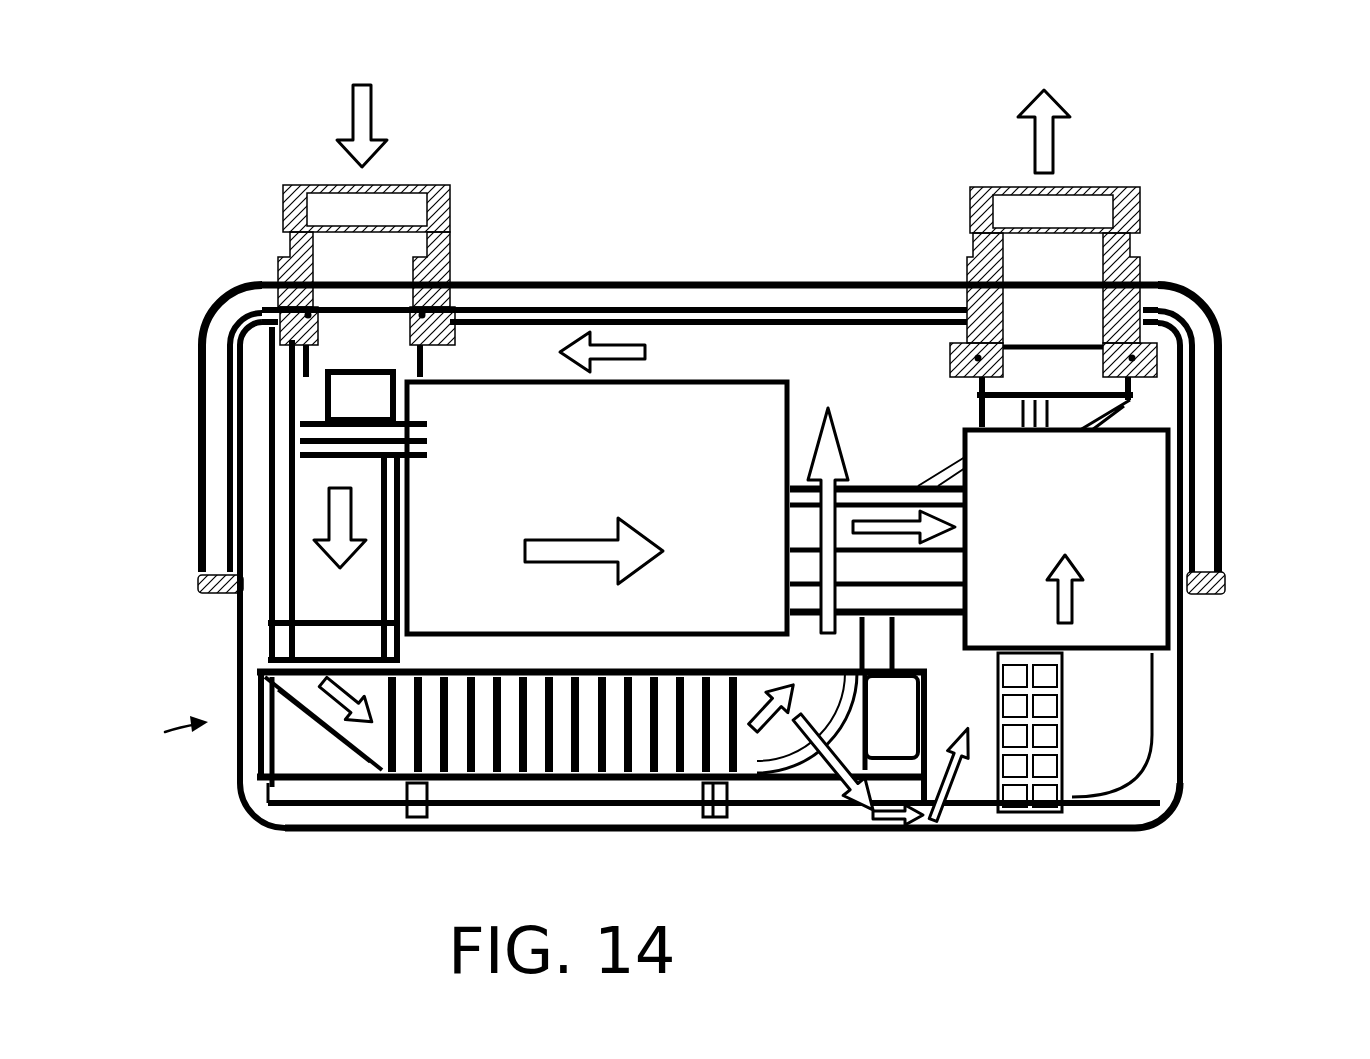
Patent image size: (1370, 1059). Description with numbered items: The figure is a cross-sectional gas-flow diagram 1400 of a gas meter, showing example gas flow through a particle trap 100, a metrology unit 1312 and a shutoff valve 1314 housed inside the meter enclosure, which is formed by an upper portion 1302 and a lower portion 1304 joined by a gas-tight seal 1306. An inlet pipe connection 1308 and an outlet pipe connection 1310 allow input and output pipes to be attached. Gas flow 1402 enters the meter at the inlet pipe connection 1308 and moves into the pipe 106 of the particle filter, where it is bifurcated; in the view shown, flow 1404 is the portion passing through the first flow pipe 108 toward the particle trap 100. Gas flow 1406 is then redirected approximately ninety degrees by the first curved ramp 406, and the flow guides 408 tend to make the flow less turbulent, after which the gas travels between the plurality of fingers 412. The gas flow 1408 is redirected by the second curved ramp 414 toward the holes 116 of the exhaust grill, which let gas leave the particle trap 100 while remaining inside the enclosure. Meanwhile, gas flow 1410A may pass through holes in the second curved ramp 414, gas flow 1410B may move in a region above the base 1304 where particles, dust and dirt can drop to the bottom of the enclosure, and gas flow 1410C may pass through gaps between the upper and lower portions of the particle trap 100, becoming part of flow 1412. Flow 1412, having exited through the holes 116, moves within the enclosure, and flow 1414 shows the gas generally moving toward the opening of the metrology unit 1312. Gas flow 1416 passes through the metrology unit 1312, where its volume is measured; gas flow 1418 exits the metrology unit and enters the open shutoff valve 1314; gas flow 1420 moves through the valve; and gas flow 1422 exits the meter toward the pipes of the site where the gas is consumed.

The particle trap 100 is at (160, 731).
The pipe 106 is at (355, 287).
The first flow pipe 108 is at (293, 540).
The first curved ramp 406 is at (335, 752).
The flow guides 408 is at (362, 758).
The fingers 412 is at (520, 735).
The second curved ramp 414 is at (782, 767).
The holes 116 is at (810, 672).
The upper portion 1302 is at (578, 282).
The lower portion 1304 is at (1113, 833).
The gas-tight seal 1306 is at (1222, 592).
The inlet pipe connection 1308 is at (298, 187).
The outlet pipe connection 1310 is at (1120, 188).
The metrology unit 1312 is at (563, 468).
The shutoff valve 1314 is at (1036, 545).
The gas-flow diagram 1400 is at (1143, 104).
The gas flow 1402 is at (375, 103).
The flow 1404 is at (328, 517).
The gas flow 1406 is at (345, 712).
The gas flow 1408 is at (757, 730).
The gas flow 1410A is at (829, 770).
The gas flow 1410B is at (893, 823).
The gas flow 1410C is at (952, 797).
The flow 1412 is at (817, 443).
The flow 1414 is at (615, 345).
The gas flow 1416 is at (585, 540).
The gas flow 1418 is at (890, 522).
The gas flow 1420 is at (1075, 600).
The gas flow 1422 is at (1030, 106).